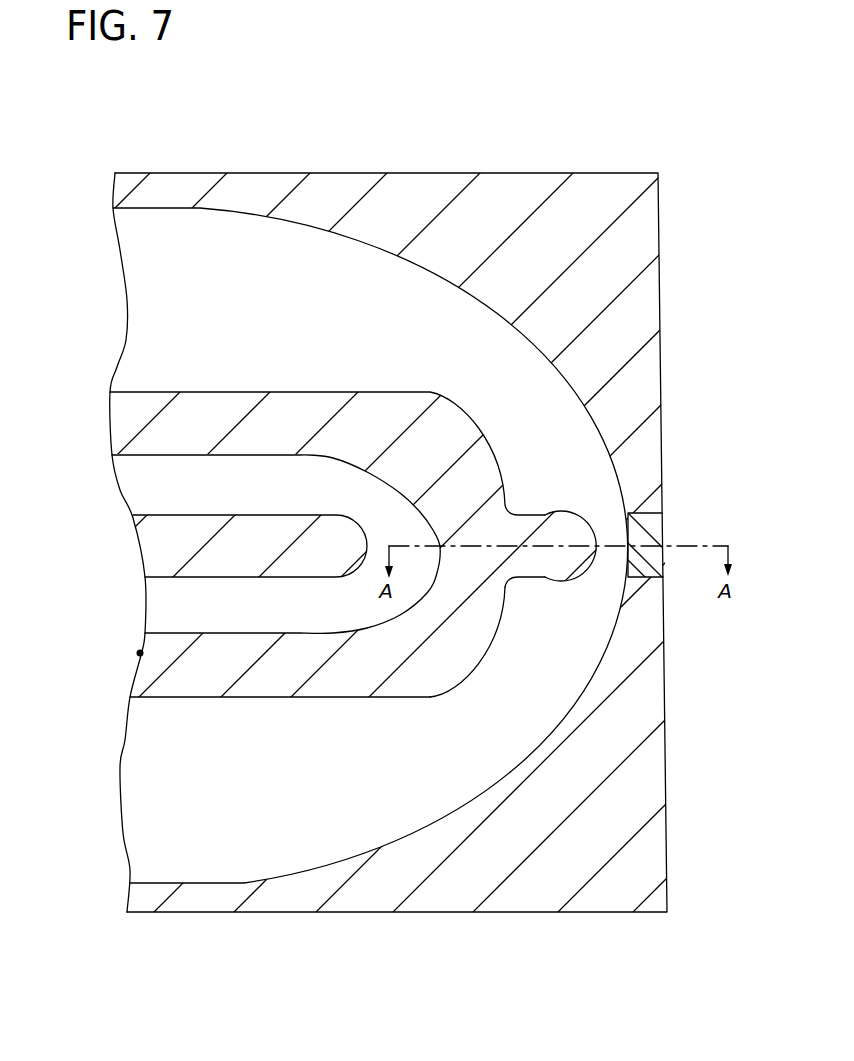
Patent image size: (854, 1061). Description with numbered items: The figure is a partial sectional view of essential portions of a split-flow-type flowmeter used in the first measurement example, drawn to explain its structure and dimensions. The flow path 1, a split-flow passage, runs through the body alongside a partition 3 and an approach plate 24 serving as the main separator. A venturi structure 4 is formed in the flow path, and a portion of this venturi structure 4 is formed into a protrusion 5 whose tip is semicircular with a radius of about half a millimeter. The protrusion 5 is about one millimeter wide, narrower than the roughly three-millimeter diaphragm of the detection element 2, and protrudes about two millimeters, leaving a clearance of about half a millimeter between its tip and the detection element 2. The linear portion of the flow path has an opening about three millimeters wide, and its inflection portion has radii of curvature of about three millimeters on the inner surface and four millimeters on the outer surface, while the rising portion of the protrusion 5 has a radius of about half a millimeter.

The flow path 1 is at (267, 255).
The detection element 2 is at (663, 533).
The partition 3 is at (370, 392).
The venturi structure 4 is at (513, 625).
The protrusion 5 is at (560, 515).
The approach plate 24 is at (153, 548).